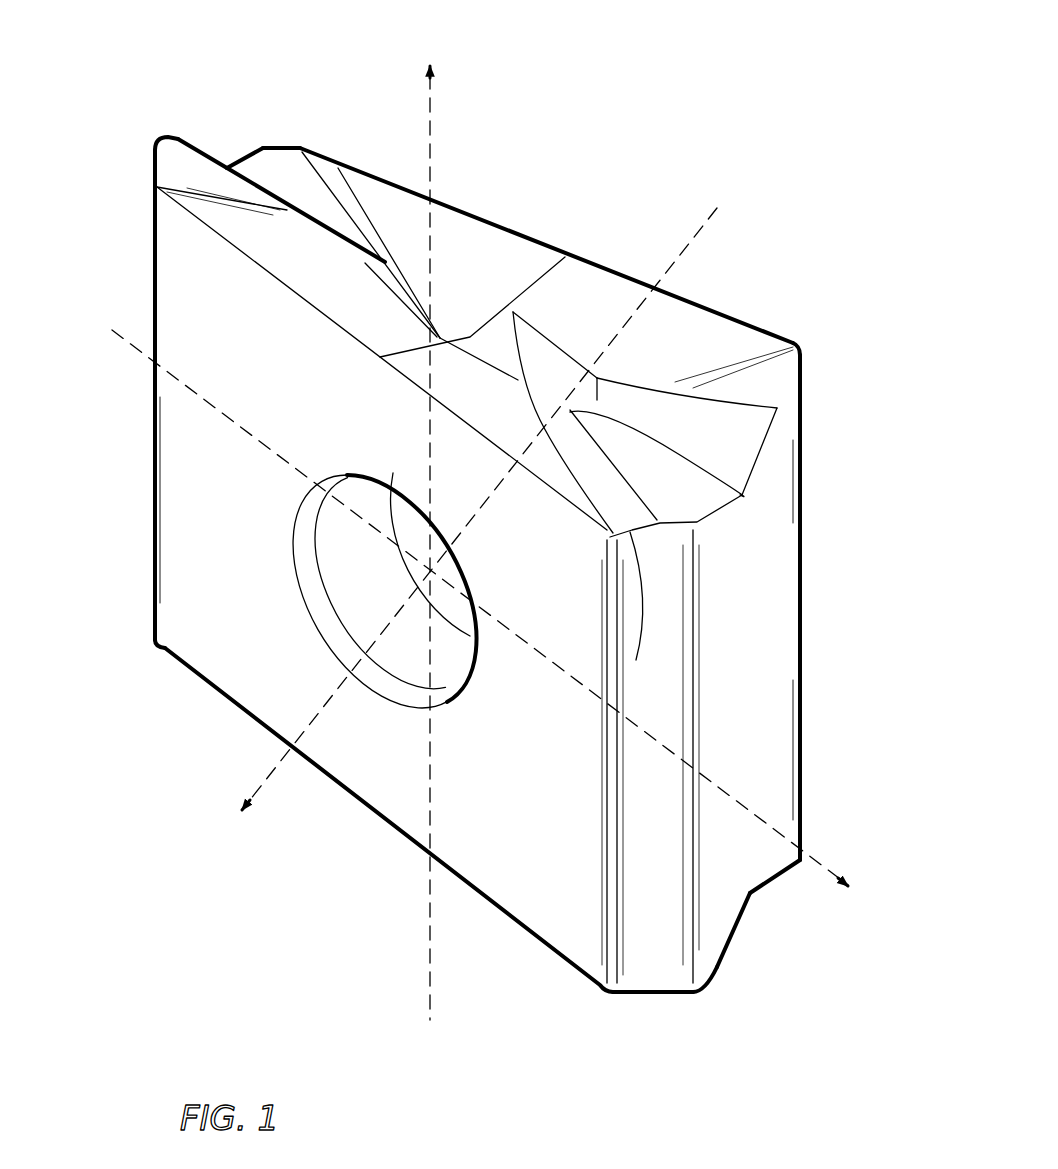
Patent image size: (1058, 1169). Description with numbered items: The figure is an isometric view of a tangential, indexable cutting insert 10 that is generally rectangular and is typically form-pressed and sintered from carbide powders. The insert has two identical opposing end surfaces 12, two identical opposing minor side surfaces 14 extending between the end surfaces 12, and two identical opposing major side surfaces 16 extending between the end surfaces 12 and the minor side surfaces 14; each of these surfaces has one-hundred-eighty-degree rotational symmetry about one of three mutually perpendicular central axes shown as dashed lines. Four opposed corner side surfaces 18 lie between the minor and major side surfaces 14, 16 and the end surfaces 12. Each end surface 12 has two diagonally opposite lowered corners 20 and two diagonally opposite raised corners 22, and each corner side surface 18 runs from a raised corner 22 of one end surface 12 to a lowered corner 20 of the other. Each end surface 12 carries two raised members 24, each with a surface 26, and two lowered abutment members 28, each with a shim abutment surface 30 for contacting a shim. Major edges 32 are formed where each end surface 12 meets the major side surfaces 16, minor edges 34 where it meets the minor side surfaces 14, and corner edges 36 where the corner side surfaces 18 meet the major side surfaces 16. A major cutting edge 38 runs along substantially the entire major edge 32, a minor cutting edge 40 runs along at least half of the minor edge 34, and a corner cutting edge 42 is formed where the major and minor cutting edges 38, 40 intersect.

The cutting insert 10 is at (474, 524).
The end surface 12 is at (427, 860).
The minor side surface 14 is at (145, 358).
The major side surface 16 is at (212, 637).
The corner side surface 18 is at (150, 437).
The lowered corner 20 is at (258, 143).
The raised corner 22 is at (147, 137).
The raised member 24 is at (240, 222).
The surface 26 is at (273, 238).
The lowered abutment member 28 is at (309, 193).
The shim abutment surface 30 is at (332, 213).
The major edge 32 is at (350, 338).
The minor edge 34 is at (231, 154).
The corner edge 36 is at (155, 530).
The major cutting edge 38 is at (290, 287).
The minor cutting edge 40 is at (238, 160).
The corner cutting edge 42 is at (155, 172).